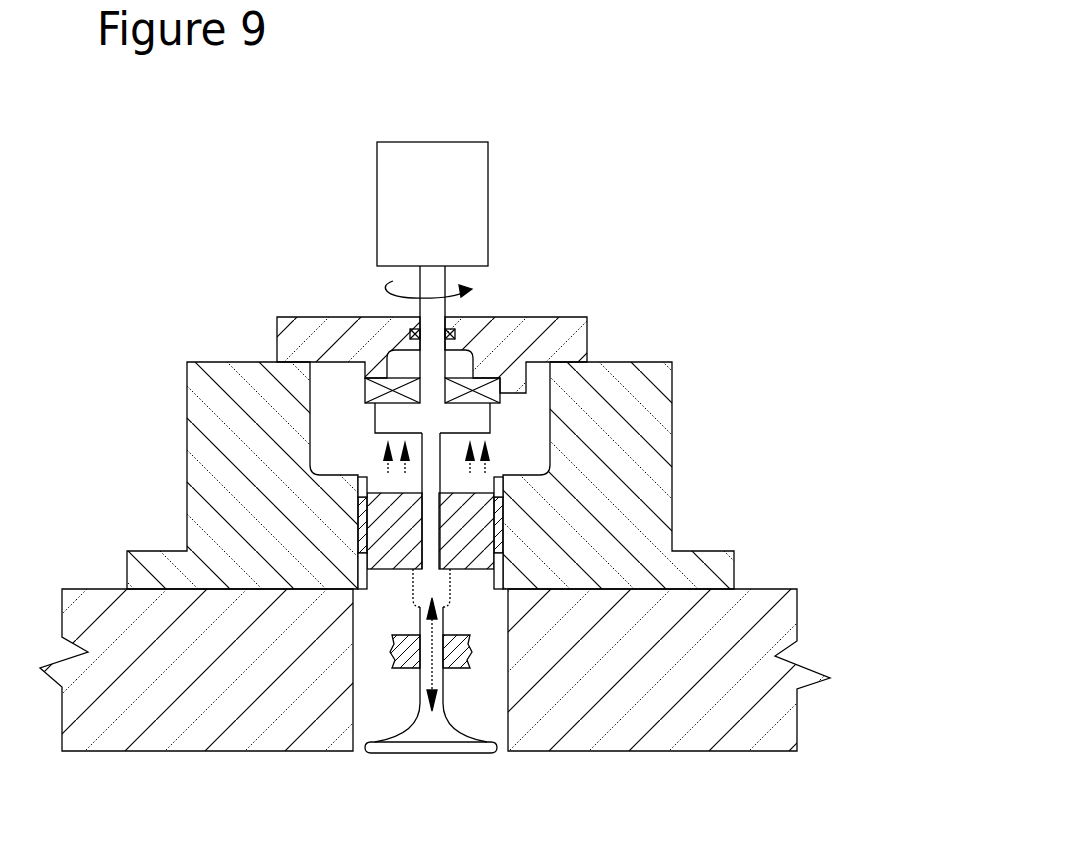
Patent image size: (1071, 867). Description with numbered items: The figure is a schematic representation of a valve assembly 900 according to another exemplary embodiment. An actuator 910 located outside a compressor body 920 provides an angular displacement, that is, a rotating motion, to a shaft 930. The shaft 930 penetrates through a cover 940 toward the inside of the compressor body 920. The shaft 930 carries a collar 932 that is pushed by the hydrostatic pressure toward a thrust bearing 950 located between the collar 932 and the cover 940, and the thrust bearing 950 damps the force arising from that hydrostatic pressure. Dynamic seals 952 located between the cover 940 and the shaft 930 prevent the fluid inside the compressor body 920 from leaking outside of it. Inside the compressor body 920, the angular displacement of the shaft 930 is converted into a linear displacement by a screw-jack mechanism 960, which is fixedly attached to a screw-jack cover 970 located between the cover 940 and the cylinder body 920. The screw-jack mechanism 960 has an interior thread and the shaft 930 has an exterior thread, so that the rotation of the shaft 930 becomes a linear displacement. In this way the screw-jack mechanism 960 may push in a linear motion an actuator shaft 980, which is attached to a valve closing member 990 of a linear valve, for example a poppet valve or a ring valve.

The valve assembly 900 is at (652, 160).
The actuator 910 is at (462, 182).
The compressor body 920 is at (718, 731).
The shaft 930 is at (423, 284).
The collar 932 is at (388, 415).
The cover 940 is at (322, 332).
The thrust bearing 950 is at (388, 382).
The dynamic seals 952 is at (450, 331).
The screw-jack mechanism 960 is at (472, 535).
The screw-jack cover 970 is at (630, 435).
The actuator shaft 980 is at (436, 628).
The valve closing member 990 is at (452, 753).